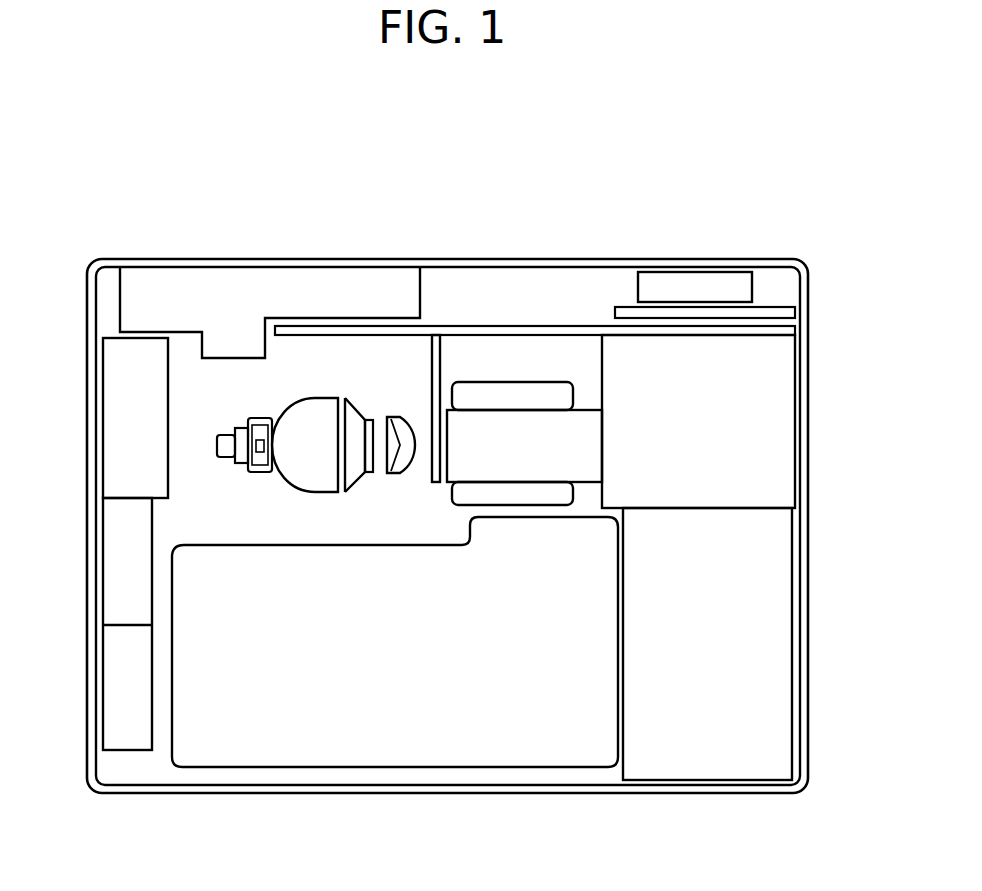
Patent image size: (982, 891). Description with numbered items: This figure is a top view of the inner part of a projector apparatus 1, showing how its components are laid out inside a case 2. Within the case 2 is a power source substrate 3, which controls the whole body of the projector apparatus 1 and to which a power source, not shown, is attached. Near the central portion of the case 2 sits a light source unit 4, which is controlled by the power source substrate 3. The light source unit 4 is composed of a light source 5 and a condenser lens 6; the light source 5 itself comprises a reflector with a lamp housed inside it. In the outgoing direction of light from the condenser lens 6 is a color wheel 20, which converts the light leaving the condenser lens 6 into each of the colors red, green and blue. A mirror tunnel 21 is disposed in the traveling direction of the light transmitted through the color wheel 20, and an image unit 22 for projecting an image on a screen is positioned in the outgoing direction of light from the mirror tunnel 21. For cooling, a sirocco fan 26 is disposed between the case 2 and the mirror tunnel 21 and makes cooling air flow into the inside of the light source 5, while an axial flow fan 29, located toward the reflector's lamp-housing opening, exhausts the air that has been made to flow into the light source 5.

The projector apparatus 1 is at (499, 168).
The case 2 is at (693, 270).
The power source substrate 3 is at (448, 767).
The light source unit 4 is at (373, 396).
The light source 5 is at (313, 408).
The condenser lens 6 is at (398, 418).
The color wheel 20 is at (440, 357).
The mirror tunnel 21 is at (583, 410).
The image unit 22 is at (833, 418).
The sirocco fan 26 is at (517, 392).
The axial flow fan 29 is at (107, 420).